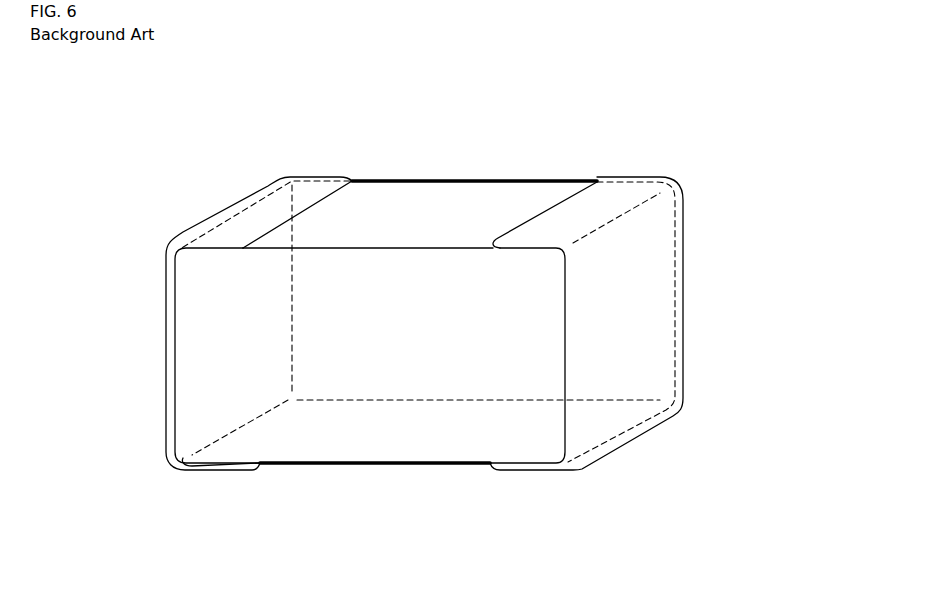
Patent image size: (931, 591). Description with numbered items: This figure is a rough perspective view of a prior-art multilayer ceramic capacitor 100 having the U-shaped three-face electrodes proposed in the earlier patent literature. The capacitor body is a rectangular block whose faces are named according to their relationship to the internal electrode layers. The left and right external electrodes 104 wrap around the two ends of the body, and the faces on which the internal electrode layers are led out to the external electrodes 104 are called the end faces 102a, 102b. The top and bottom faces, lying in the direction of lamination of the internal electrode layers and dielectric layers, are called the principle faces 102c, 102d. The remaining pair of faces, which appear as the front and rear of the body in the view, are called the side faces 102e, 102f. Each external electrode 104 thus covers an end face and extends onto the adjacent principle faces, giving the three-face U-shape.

The multilayer ceramic capacitor 100 is at (637, 155).
The end face 102a is at (203, 337).
The end face 102b is at (640, 305).
The principle face 102c is at (413, 205).
The principle face 102d is at (435, 438).
The side face 102e is at (317, 431).
The side face 102f is at (471, 207).
The external electrode 104 is at (681, 352).